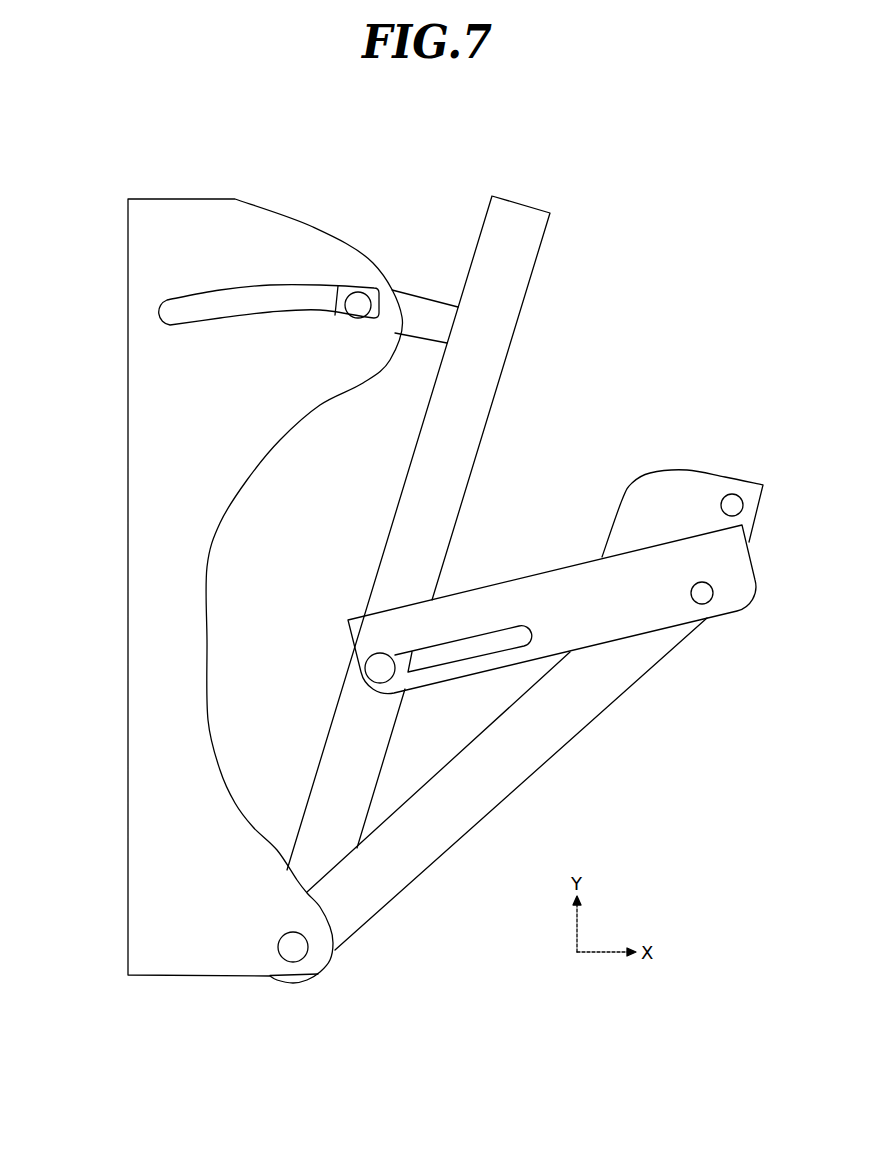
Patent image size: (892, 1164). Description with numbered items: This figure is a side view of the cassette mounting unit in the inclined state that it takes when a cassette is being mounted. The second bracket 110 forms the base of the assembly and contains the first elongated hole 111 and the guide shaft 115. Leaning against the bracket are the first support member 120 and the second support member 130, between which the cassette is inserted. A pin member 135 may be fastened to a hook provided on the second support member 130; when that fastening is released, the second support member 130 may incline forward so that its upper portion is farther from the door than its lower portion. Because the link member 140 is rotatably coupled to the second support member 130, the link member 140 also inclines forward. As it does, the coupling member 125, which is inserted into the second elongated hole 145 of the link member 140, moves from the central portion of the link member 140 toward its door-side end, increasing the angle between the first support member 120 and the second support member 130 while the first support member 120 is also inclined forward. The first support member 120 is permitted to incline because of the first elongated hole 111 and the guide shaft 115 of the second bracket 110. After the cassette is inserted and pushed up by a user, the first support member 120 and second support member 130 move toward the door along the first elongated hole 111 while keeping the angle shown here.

The second bracket 110 is at (150, 418).
The first elongated hole 111 is at (208, 305).
The guide shaft 115 is at (358, 300).
The first support member 120 is at (512, 218).
The coupling member 125 is at (375, 668).
The second support member 130 is at (596, 712).
The pin member 135 is at (732, 502).
The link member 140 is at (743, 570).
The second elongated hole 145 is at (705, 600).